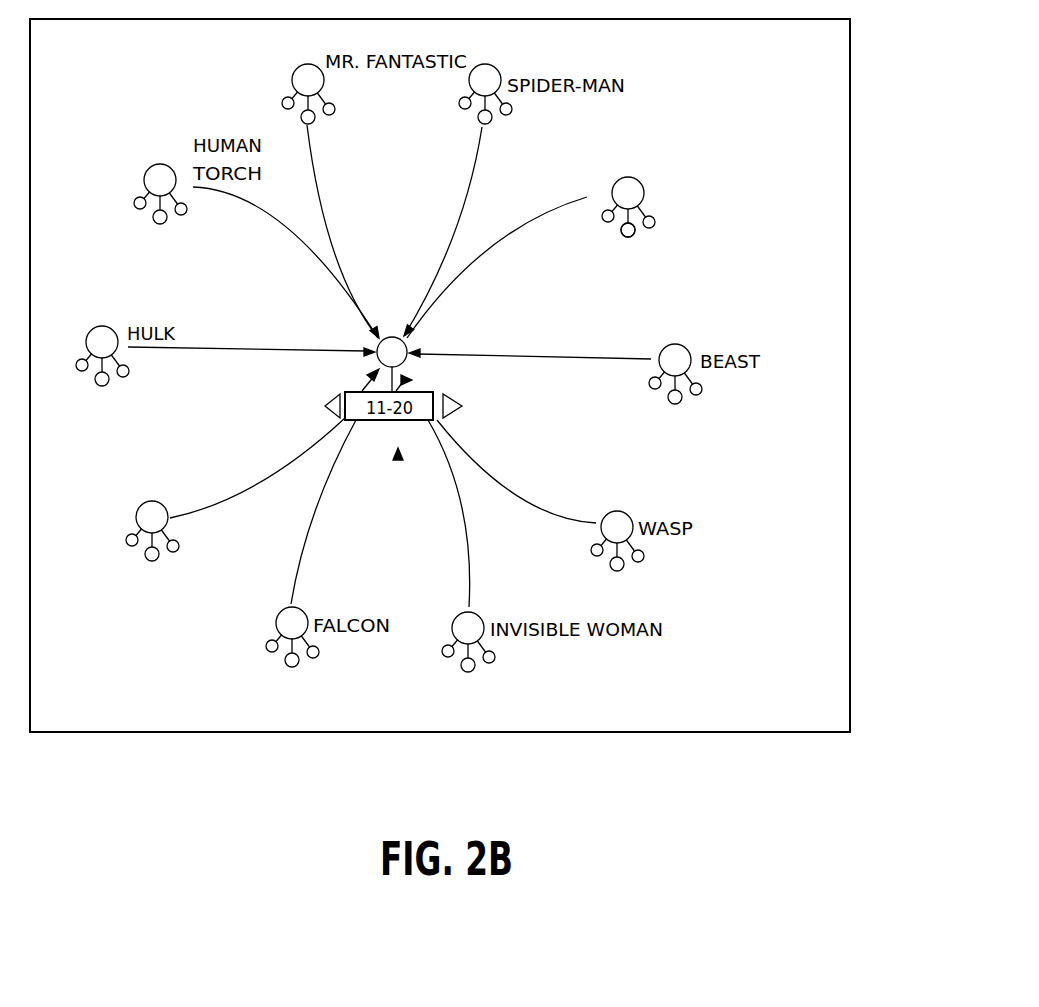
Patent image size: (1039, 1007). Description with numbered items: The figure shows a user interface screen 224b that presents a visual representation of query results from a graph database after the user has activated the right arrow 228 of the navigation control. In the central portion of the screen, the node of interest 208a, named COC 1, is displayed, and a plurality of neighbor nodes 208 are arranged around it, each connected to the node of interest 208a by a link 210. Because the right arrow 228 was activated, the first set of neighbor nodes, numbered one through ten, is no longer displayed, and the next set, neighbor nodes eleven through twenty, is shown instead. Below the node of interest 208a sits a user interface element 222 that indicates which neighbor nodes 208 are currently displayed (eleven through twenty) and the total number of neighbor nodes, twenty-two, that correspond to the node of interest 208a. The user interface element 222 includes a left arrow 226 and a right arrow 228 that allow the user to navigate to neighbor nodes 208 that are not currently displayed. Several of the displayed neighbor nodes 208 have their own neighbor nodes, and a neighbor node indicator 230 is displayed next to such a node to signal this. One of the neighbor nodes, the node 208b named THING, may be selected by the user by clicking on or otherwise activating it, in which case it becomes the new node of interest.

The neighbor node 208 is at (137, 514).
The node of interest 208a is at (370, 344).
The neighbor node 208b is at (624, 178).
The link 210 is at (238, 497).
The user interface element 222 is at (398, 462).
The user interface screen 224b is at (851, 187).
The left arrow 226 is at (331, 410).
The right arrow 228 is at (447, 401).
The neighbor node indicator 230 is at (630, 238).